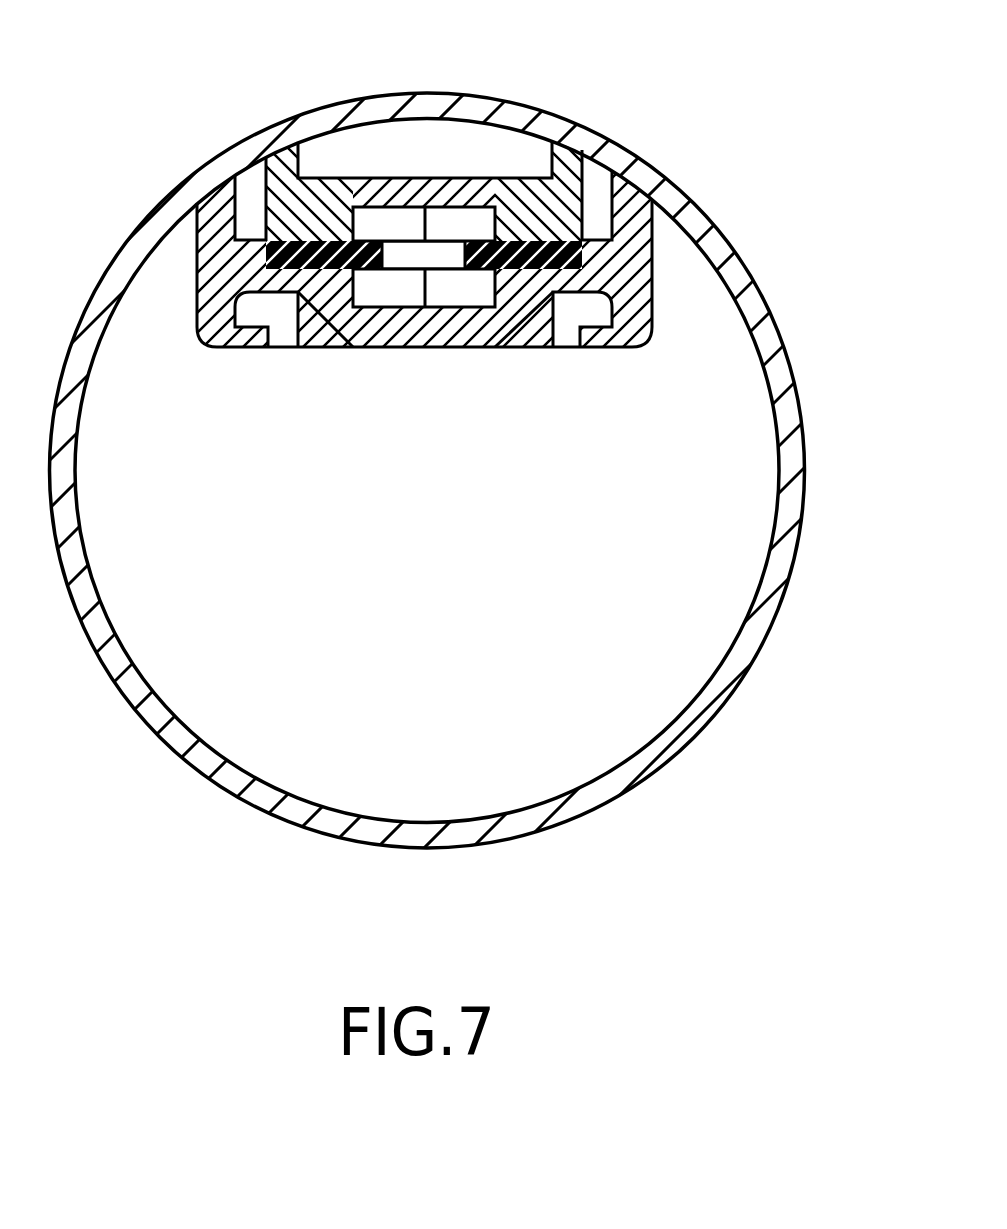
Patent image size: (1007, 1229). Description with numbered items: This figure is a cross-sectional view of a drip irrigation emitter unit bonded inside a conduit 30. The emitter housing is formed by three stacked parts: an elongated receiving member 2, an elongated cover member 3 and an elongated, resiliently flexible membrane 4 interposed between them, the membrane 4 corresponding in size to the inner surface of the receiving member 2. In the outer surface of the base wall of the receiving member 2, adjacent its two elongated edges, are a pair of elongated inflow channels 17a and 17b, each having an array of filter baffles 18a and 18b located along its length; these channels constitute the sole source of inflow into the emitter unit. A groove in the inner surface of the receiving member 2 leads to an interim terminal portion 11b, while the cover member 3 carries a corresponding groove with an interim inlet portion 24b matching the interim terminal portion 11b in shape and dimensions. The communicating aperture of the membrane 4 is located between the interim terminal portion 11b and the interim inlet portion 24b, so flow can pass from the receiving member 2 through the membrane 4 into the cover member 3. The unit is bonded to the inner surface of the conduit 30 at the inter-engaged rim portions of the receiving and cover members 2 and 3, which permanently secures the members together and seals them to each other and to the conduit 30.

The receiving member 2 is at (178, 304).
The cover member 3 is at (322, 166).
The resiliently flexible membrane 4 is at (653, 250).
The interim terminal portion 11b is at (388, 283).
The inflow channel 17a is at (253, 307).
The inflow channel 17b is at (596, 305).
The filter baffles 18a is at (317, 320).
The filter baffles 18b is at (527, 333).
The interim inlet portion 24b is at (458, 223).
The conduit 30 is at (803, 440).